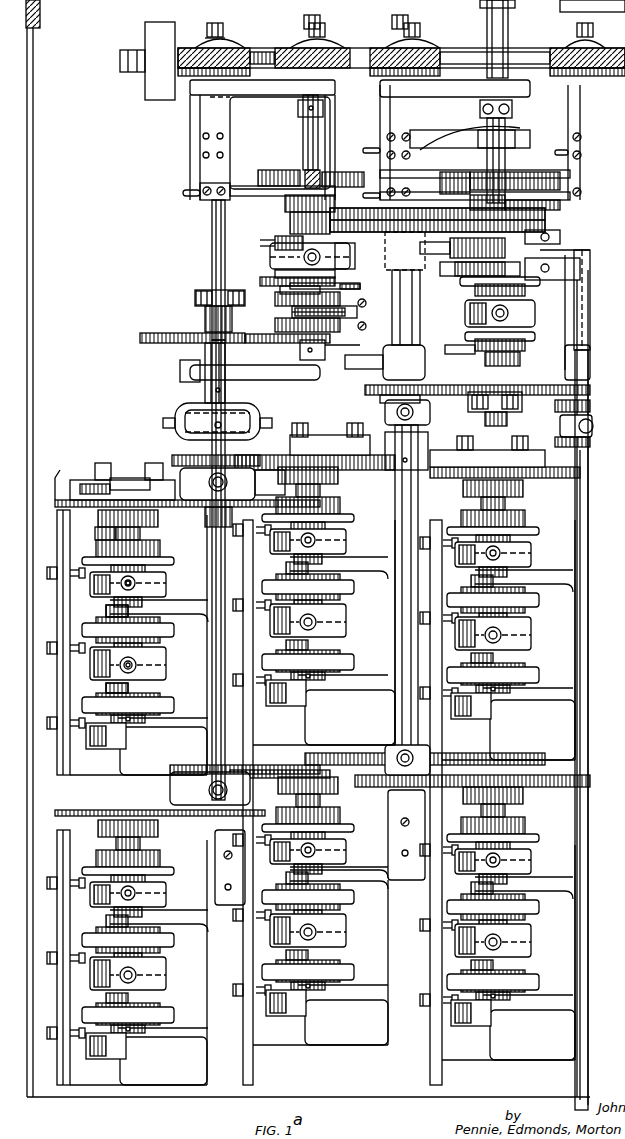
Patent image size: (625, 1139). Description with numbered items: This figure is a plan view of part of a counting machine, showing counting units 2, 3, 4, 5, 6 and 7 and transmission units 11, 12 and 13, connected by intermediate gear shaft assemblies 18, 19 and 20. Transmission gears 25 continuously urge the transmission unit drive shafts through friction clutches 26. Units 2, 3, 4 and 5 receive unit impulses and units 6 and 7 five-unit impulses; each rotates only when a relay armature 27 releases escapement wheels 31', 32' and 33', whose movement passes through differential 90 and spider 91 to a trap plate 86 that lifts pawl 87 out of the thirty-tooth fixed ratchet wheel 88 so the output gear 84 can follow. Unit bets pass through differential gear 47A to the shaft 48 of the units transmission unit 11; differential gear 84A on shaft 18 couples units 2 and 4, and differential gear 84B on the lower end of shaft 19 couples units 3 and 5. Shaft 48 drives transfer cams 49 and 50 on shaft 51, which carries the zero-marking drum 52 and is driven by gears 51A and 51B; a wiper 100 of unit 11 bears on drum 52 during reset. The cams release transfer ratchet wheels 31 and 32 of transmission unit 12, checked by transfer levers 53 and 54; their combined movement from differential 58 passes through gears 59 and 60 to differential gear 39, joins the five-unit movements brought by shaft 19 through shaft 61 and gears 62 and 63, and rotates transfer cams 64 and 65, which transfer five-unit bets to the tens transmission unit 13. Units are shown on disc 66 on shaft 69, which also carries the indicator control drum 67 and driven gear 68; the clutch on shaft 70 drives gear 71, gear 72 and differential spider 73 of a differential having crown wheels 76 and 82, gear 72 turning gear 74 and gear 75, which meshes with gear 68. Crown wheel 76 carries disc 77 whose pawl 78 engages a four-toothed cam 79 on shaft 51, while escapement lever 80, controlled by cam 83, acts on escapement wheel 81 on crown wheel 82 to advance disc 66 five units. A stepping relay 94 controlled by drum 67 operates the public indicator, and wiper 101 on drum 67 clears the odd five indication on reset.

The transmission gear 25 is at (182, 50).
The friction clutch 26 is at (232, 40).
The shaft 70 is at (315, 14).
The shaft 61 is at (404, 26).
The units disc 66 is at (578, 2).
The shaft 69 is at (500, 40).
The units transmission unit 11 is at (195, 262).
The shaft 51 is at (303, 130).
The drum 52 is at (280, 176).
The gear 71 is at (320, 198).
The gear 72 is at (340, 210).
The wiper 100 is at (248, 198).
The shaft 48 is at (212, 232).
The escapement wheel 81 is at (283, 240).
The crown wheel 82 is at (275, 243).
The differential spider 73 is at (300, 258).
The crown wheel 76 is at (345, 256).
The disc 77 is at (358, 285).
The cam 79 is at (265, 281).
The pawl 78 is at (340, 292).
The transfer cam 50 is at (275, 300).
The transfer lever 54 is at (355, 310).
The transfer cam 49 is at (275, 325).
The transfer lever 53 is at (355, 356).
The gear 51A is at (170, 343).
The gear 51B is at (287, 343).
The differential gear 47A is at (170, 410).
The fixed ratchet wheel 88 is at (155, 465).
The pawl 87 is at (135, 480).
The trap plate 86 is at (78, 480).
The output gear 84 is at (55, 490).
The differential gear 84A is at (270, 484).
The differential gear 84B is at (240, 796).
The stepping relay 94 is at (440, 125).
The units public indicator control drum 67 is at (530, 178).
The gear 75 is at (420, 210).
The gear 74 is at (400, 200).
The wiper 101 is at (450, 195).
The driven gear 68 is at (478, 212).
The gear 62 is at (440, 232).
The gear 63 is at (530, 212).
The transfer cam 65 is at (548, 237).
The cam 83 is at (460, 250).
The escapement lever 80 is at (418, 266).
The transfer cam 64 is at (550, 262).
The transmission unit 12 is at (382, 355).
The gear 60 is at (365, 392).
The differential gear 39 is at (413, 412).
The gear 59 is at (468, 398).
The transfer ratchet wheel 32 is at (507, 288).
The differential 58 is at (525, 313).
The transfer ratchet wheel 31 is at (500, 346).
The tens transmission unit 13 is at (572, 352).
The intermediate gear shaft assembly 18 is at (212, 657).
The intermediate gear shaft assembly 19 is at (395, 628).
The intermediate gear shaft assembly 20 is at (575, 643).
The counting unit 2 is at (127, 642).
The counting unit 3 is at (127, 957).
The counting unit 4 is at (314, 802).
The counting unit 5 is at (320, 917).
The counting unit 6 is at (497, 802).
The counting unit 7 is at (497, 952).
The armature 27 is at (172, 556).
The spider 91 is at (140, 581).
The differential 90 is at (145, 664).
The escapement wheel 33' is at (95, 531).
The escapement wheel 32' is at (101, 609).
The escapement wheel 31' is at (101, 686).